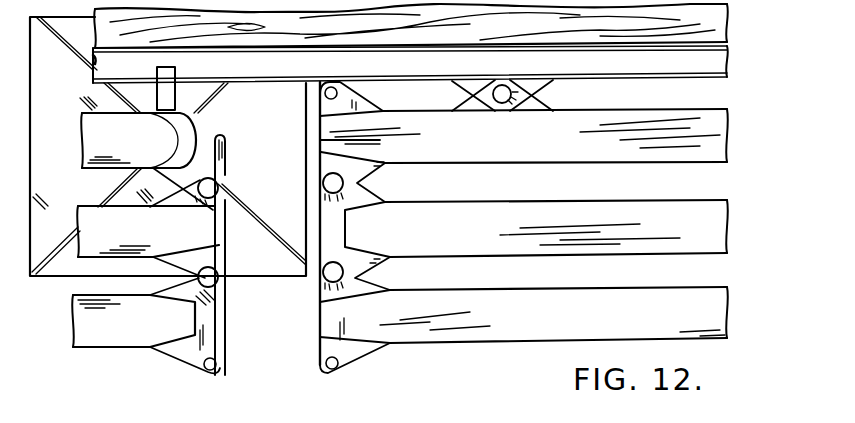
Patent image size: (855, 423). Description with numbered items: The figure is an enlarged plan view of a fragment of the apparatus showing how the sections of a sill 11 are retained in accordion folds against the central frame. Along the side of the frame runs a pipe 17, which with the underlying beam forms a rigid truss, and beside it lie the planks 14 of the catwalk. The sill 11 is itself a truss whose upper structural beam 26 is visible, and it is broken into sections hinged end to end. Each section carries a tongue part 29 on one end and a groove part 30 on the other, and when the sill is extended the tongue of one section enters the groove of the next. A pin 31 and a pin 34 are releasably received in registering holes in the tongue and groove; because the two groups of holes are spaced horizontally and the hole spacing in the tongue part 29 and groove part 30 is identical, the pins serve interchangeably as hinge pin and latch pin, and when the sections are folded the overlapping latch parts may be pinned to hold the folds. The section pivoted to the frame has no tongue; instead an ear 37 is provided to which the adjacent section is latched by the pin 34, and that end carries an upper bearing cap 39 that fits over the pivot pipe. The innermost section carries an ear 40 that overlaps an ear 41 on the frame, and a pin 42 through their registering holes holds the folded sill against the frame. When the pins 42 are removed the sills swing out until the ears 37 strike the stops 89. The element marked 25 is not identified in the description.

The sill 11 is at (520, 352).
The catwalk planks 14 is at (473, 30).
The pipe 17 is at (653, 70).
The frame 25 is at (64, 121).
The upper structural beam 26 is at (130, 340).
The tongue part 29 is at (213, 341).
The groove part 30 is at (212, 258).
The pin 31 is at (322, 277).
The pin 34 is at (210, 187).
The ear 37 is at (207, 166).
The upper bearing cap 39 is at (194, 135).
The ear 40 is at (552, 96).
The ear 41 is at (558, 84).
The pin 42 is at (466, 100).
The stop 89 is at (173, 96).